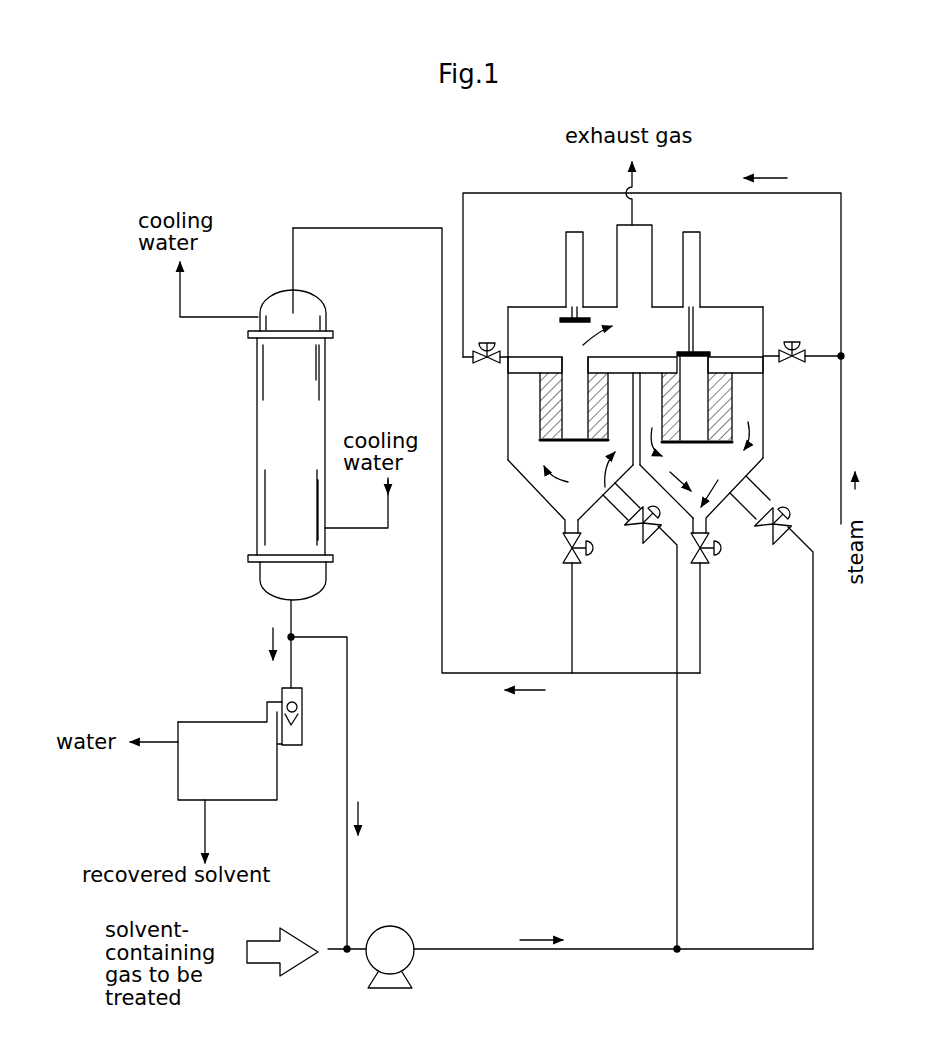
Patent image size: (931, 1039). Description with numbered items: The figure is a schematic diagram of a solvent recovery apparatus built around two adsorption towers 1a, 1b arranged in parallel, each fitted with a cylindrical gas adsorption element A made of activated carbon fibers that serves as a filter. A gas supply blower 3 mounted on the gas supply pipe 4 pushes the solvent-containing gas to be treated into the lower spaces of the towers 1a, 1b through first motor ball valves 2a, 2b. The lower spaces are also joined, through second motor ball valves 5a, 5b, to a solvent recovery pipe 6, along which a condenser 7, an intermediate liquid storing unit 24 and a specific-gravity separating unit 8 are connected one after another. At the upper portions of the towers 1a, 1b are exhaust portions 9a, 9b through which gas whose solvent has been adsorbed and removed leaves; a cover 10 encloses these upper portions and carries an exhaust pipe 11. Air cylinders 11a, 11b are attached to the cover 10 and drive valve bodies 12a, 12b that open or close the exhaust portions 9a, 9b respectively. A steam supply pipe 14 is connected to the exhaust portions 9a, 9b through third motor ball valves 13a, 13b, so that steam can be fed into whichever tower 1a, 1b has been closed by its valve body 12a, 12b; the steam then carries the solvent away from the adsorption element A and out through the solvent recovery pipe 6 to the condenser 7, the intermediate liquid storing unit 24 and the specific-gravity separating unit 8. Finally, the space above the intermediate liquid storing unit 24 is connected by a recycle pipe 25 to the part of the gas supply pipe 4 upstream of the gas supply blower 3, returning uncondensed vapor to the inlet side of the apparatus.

The adsorption tower 1a is at (543, 498).
The adsorption tower 1b is at (764, 438).
The first motor ball valve 2a is at (653, 542).
The first motor ball valve 2b is at (787, 535).
The gas supply blower 3 is at (397, 938).
The gas supply pipe 4 is at (576, 952).
The second motor ball valve 5a is at (563, 562).
The second motor ball valve 5b is at (716, 552).
The solvent recovery pipe 6 is at (476, 674).
The condenser 7 is at (258, 455).
The specific-gravity separating unit 8 is at (236, 802).
The exhaust portion 9a is at (565, 353).
The exhaust portion 9b is at (690, 370).
The cover 10 is at (758, 305).
The exhaust pipe 11 is at (646, 242).
The air cylinder 11a is at (567, 248).
The air cylinder 11b is at (701, 241).
The valve body 12a is at (560, 318).
The valve body 12b is at (706, 351).
The third motor ball valve 13a is at (493, 364).
The third motor ball valve 13b is at (807, 323).
The steam supply pipe 14 is at (822, 355).
The intermediate liquid storing unit 24 is at (297, 695).
The recycle pipe 25 is at (322, 637).
The gas adsorption element A is at (535, 438).